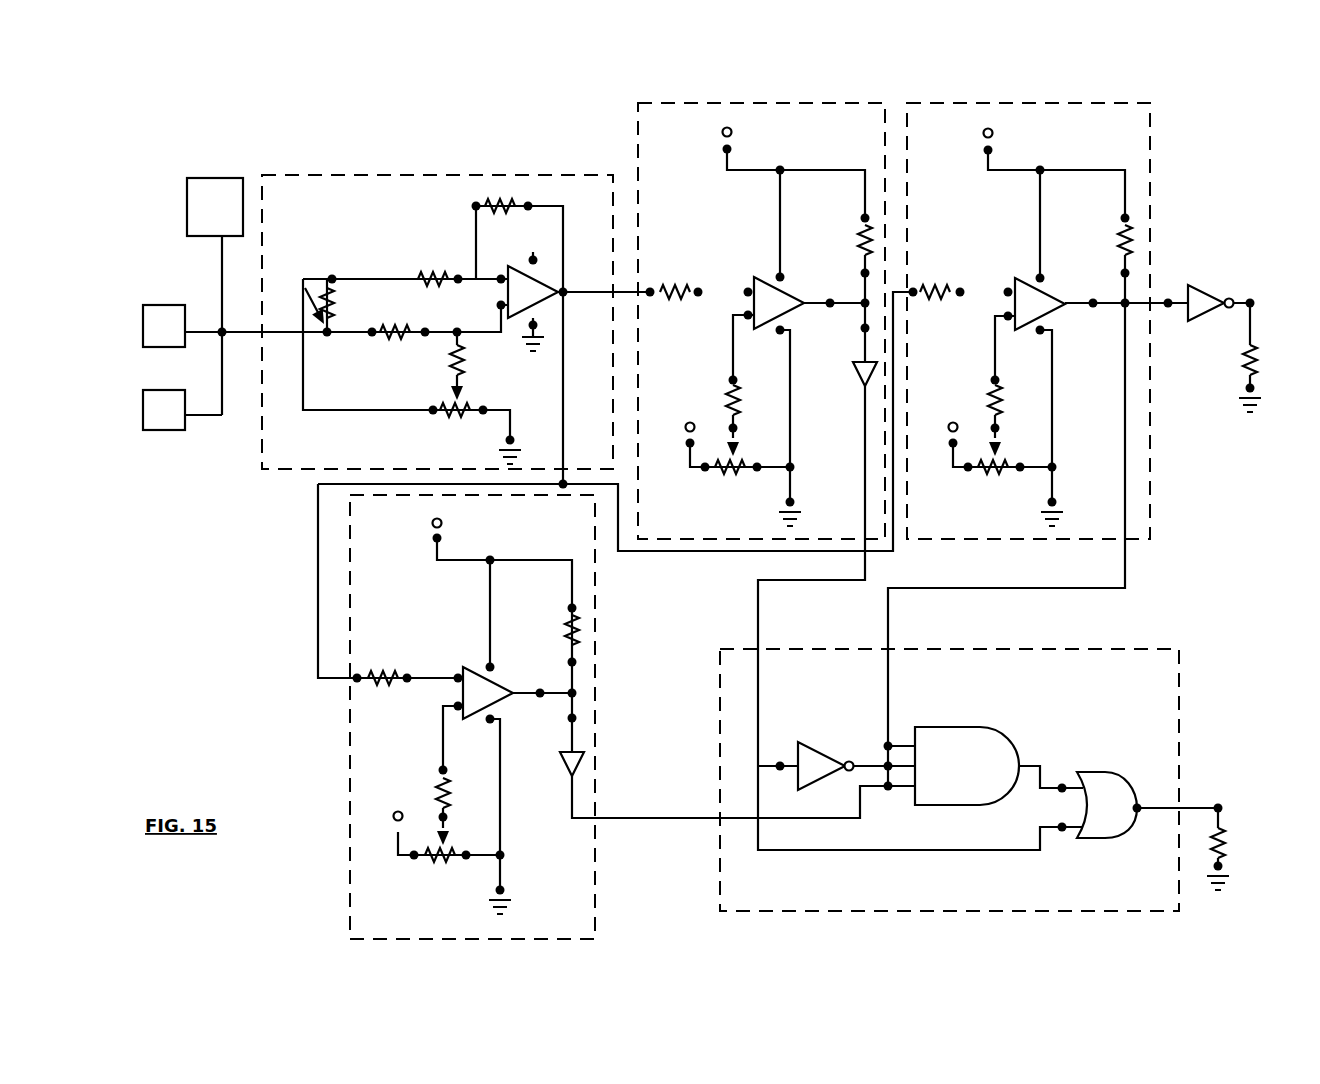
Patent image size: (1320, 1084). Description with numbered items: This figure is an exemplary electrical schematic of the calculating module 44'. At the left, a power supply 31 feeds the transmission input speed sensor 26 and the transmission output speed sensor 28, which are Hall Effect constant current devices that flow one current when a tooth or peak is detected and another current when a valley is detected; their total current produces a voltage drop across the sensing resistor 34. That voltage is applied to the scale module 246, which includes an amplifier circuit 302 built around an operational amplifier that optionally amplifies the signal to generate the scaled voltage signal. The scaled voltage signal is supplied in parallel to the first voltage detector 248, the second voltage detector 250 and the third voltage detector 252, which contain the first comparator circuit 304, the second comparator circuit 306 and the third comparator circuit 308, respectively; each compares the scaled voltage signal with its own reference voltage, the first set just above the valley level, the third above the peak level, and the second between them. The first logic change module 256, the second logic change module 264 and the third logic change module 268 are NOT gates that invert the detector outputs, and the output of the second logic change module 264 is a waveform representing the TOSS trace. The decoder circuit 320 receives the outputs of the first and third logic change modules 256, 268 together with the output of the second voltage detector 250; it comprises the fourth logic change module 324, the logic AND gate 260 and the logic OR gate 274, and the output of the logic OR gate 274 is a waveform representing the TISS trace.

The power supply 31 is at (218, 178).
The transmission input speed sensor 26 is at (176, 347).
The transmission output speed sensor 28 is at (160, 430).
The sensing resistor 34 is at (316, 312).
The scale module 246 is at (440, 212).
The amplifier circuit 302 is at (446, 307).
The first comparator circuit 304 is at (594, 615).
The first voltage detector 248 is at (348, 770).
The first logic change module 256 is at (582, 768).
The third comparator circuit 308 is at (860, 461).
The third voltage detector 252 is at (798, 103).
The third logic change module 268 is at (862, 372).
The second comparator circuit 306 is at (1086, 448).
The second voltage detector 250 is at (1020, 103).
The second logic change module 264 is at (1205, 290).
The calculating module 44' is at (700, 506).
The decoder circuit 320 is at (974, 758).
The fourth logic change module 324 is at (810, 740).
The logic AND gate 260 is at (950, 727).
The logic OR gate 274 is at (1103, 838).